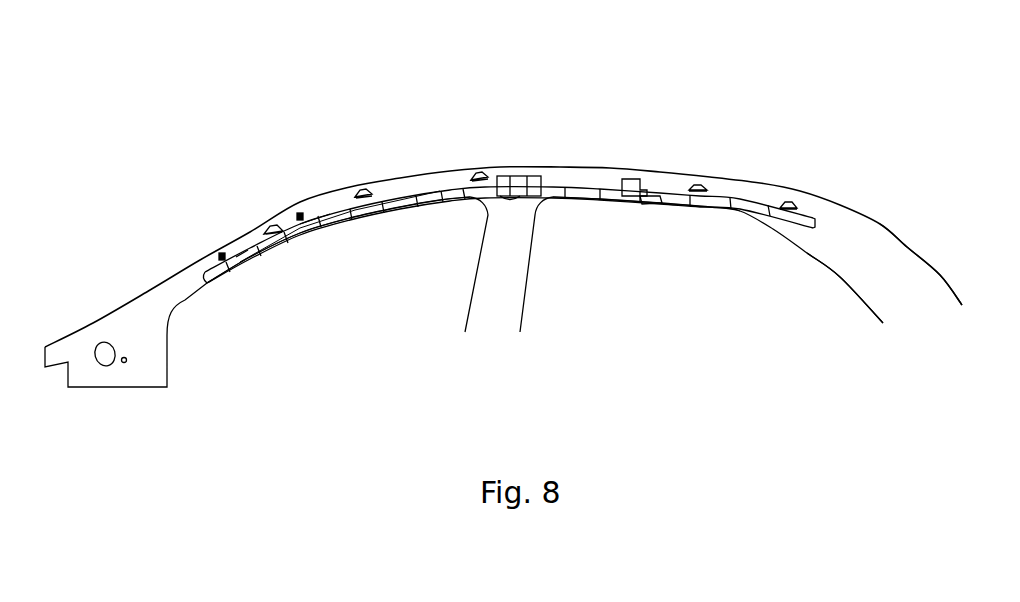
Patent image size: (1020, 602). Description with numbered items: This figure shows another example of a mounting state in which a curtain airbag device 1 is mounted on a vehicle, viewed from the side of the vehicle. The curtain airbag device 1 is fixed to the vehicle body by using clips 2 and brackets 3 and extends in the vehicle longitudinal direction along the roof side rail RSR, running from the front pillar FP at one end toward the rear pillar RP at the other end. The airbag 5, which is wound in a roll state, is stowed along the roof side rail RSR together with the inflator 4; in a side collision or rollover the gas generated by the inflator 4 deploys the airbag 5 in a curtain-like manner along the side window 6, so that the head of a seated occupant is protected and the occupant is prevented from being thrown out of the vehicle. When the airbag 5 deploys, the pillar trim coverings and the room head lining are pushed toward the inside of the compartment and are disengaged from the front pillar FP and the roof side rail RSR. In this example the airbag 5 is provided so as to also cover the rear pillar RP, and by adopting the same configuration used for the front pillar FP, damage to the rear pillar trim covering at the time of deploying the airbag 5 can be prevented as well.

The curtain airbag device 1 is at (626, 56).
The clip 2 is at (220, 253).
The bracket 3 is at (272, 225).
The inflator 4 is at (632, 179).
The airbag 5 is at (650, 203).
The side window 6 is at (307, 280).
The front pillar FP is at (177, 287).
The rear pillar RP is at (862, 240).
The roof side rail RSR is at (515, 173).